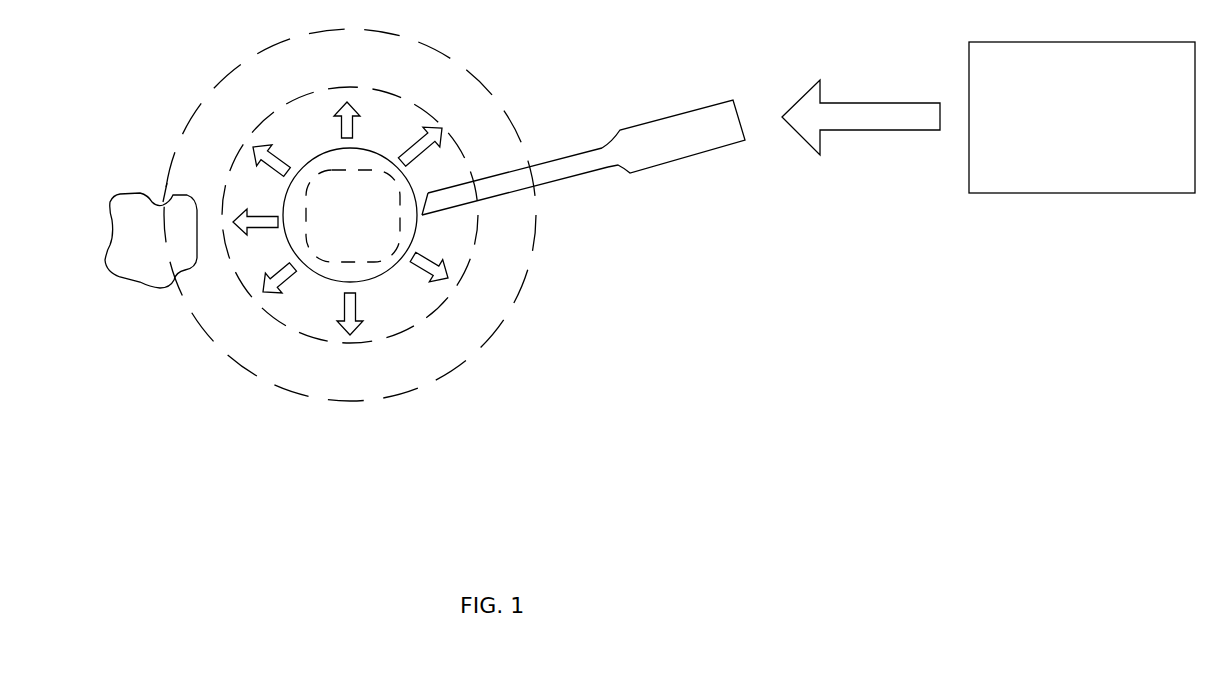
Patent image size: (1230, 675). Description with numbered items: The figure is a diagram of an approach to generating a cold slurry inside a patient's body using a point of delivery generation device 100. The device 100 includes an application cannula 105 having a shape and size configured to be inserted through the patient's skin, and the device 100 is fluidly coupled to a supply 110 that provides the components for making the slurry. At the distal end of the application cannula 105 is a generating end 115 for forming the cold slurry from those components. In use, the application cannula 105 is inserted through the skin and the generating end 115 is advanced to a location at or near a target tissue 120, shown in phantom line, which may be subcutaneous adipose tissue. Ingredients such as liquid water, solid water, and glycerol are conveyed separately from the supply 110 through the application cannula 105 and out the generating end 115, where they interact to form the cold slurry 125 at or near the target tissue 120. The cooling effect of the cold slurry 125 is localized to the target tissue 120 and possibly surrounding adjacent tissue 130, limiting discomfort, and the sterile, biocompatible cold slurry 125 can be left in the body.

The point of delivery generation device 100 is at (591, 190).
The application cannula 105 is at (543, 165).
The supply 110 is at (1082, 117).
The generating end 115 is at (423, 216).
The target tissue 120 is at (327, 258).
The cold slurry 125 is at (382, 277).
The adjacent tissue 130 is at (153, 288).